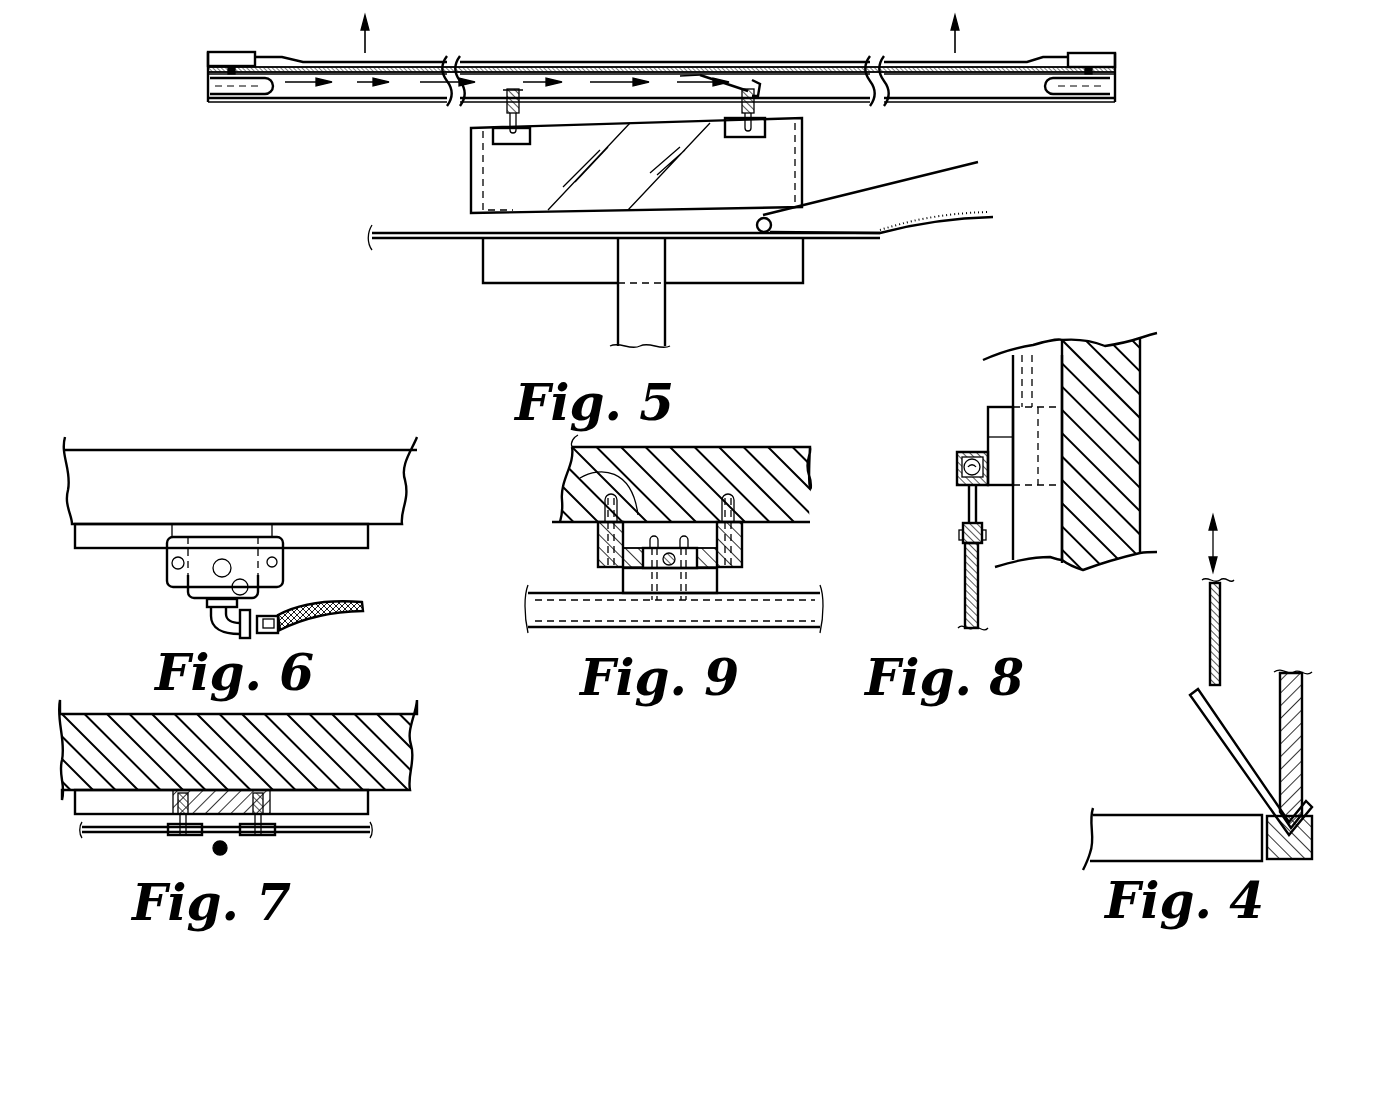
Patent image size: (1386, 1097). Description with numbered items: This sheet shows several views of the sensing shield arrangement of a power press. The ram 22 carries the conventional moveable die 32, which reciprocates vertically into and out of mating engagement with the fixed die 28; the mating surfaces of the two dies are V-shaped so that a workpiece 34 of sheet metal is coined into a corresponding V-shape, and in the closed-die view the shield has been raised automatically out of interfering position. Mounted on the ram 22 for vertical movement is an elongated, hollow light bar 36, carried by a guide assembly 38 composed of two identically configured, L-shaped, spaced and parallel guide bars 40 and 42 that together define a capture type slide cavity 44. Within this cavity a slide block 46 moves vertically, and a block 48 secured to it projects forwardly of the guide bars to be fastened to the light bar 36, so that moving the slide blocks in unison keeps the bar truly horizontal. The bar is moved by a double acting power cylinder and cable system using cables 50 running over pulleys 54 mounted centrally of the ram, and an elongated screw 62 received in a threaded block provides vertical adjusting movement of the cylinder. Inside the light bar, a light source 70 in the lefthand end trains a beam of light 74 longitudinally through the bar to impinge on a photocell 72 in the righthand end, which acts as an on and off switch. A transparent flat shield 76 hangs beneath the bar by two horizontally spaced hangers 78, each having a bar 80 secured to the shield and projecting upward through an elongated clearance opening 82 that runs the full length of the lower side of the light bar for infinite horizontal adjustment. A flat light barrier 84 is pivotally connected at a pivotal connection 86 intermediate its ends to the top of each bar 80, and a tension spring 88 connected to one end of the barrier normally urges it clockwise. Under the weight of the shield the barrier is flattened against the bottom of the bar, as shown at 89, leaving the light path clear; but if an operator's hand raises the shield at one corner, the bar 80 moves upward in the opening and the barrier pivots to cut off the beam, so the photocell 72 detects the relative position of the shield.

In FIG. 6, the ram 22 is at (128, 457).
In FIG. 7, the ram 22 is at (342, 714).
In FIG. 9, the ram 22 is at (775, 452).
In FIG. 8, the ram 22 is at (1143, 483).
In FIG. 4, the fixed die 28 is at (1312, 836).
In FIG. 5, the moveable die 32 is at (483, 185).
In FIG. 4, the moveable die 32 is at (1302, 722).
In FIG. 4, the workpiece 34 is at (1226, 748).
In FIG. 5, the light bar 36 is at (567, 63).
In FIG. 9, the light bar 36 is at (802, 593).
In FIG. 8, the light bar 36 is at (957, 468).
In FIG. 9, the guide assembly 38 is at (596, 567).
In FIG. 8, the guide assembly 38 is at (1045, 556).
In FIG. 9, the guide bar 40 is at (597, 542).
In FIG. 9, the guide bar 42 is at (742, 548).
In FIG. 8, the guide bar 42 is at (1052, 527).
In FIG. 9, the slide cavity 44 is at (582, 478).
In FIG. 9, the slide block 46 is at (698, 535).
In FIG. 8, the slide block 46 is at (1047, 430).
In FIG. 9, the block 48 is at (717, 582).
In FIG. 8, the block 48 is at (1000, 473).
In FIG. 7, the cable 50 is at (350, 832).
In FIG. 7, the pulley 54 is at (267, 837).
In FIG. 7, the screw 62 is at (210, 849).
In FIG. 5, the light source 70 is at (228, 80).
In FIG. 8, the light source 70 is at (975, 460).
In FIG. 5, the photocell 72 is at (1092, 80).
In FIG. 5, the beam of light 74 is at (308, 80).
In FIG. 5, the shield 76 is at (486, 113).
In FIG. 8, the shield 76 is at (965, 595).
In FIG. 4, the shield 76 is at (1210, 658).
In FIG. 5, the hanger 78 is at (733, 108).
In FIG. 5, the bar 80 is at (522, 110).
In FIG. 8, the bar 80 is at (970, 502).
In FIG. 5, the clearance opening 82 is at (497, 76).
In FIG. 5, the light barrier 84 is at (741, 77).
In FIG. 5, the pivotal connection 86 is at (758, 86).
In FIG. 5, the tension spring 88 is at (764, 106).
In FIG. 5, the flattened barrier position 89 is at (480, 87).